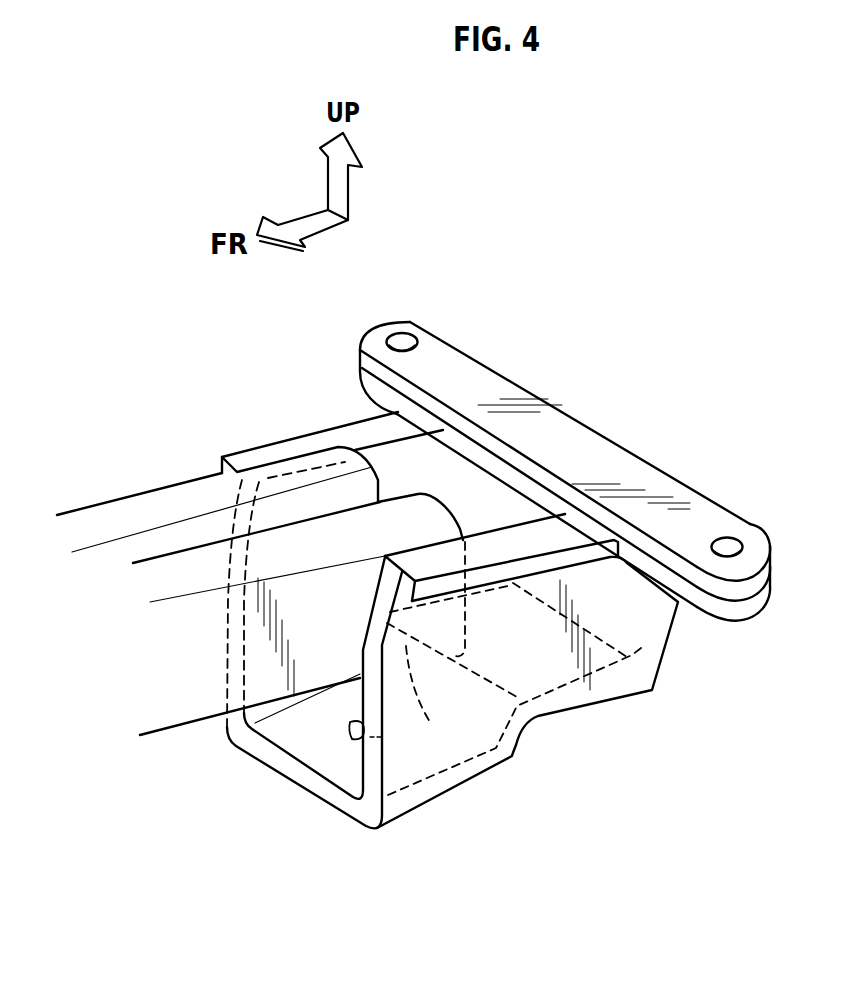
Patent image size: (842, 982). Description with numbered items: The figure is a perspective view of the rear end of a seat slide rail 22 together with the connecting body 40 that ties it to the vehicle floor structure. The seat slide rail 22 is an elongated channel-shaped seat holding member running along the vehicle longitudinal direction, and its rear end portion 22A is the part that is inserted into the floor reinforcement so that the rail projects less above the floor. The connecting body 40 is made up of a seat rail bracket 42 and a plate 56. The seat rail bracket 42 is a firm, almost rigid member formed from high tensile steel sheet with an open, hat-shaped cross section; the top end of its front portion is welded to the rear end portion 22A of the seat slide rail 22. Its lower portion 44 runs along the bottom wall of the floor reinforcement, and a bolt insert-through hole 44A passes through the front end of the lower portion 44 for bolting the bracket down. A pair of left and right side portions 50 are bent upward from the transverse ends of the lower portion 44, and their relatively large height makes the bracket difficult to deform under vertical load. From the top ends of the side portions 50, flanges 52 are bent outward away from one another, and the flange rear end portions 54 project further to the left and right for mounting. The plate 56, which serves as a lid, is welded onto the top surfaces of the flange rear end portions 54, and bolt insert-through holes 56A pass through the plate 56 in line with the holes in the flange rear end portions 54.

The seat slide rail 22 is at (126, 489).
The rear end portion 22A is at (421, 702).
The connecting body 40 is at (539, 477).
The seat rail bracket 42 is at (330, 505).
The lower portion 44 is at (293, 669).
The bolt insert-through hole 44A is at (352, 723).
The side portion 50 is at (417, 457).
The flange 52 is at (288, 435).
The flange rear end portion 54 is at (368, 387).
The plate 56 is at (657, 486).
The bolt insert-through hole 56A is at (404, 338).